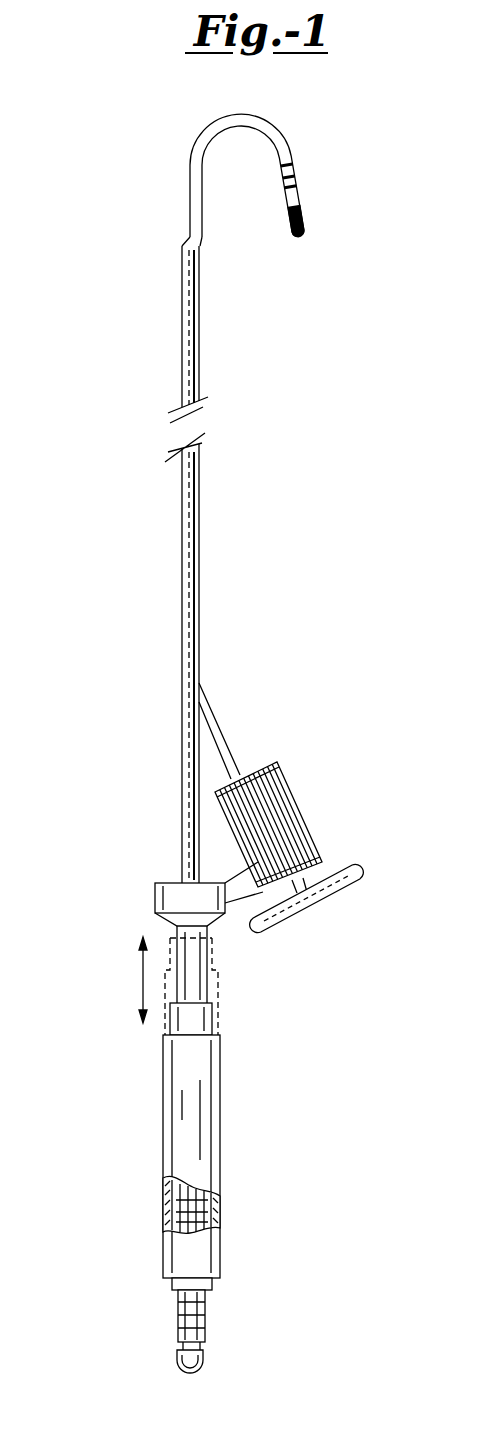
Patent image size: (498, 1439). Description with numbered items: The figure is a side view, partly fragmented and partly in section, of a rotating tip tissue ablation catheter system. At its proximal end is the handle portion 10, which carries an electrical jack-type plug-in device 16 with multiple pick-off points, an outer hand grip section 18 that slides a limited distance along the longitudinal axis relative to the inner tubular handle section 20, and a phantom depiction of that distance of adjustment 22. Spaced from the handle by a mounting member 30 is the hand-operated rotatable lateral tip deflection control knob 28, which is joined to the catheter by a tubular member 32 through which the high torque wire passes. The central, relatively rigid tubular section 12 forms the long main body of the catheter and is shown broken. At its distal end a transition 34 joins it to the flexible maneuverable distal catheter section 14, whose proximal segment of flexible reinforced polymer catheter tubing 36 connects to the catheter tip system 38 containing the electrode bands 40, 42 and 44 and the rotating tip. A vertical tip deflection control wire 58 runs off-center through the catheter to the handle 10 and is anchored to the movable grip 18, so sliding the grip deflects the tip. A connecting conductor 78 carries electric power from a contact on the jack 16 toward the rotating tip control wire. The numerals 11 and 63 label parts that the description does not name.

The handle portion 10 is at (253, 1098).
The actuator button 11 is at (165, 1370).
The central tubular section 12 is at (218, 560).
The distal catheter section 14 is at (180, 115).
The electrical jack-type plug-in device 16 is at (203, 1312).
The outer hand grip section 18 is at (167, 1102).
The inner tubular handle section 20 is at (208, 928).
The distance of adjustment 22 is at (222, 1007).
The lateral tip deflection control knob 28 is at (314, 798).
The mounting member 30 is at (237, 907).
The tubular member 32 is at (222, 728).
The transition 34 is at (187, 237).
The flexible reinforced polymer catheter tubing 36 is at (238, 122).
The catheter tip system 38 is at (322, 201).
The electrode band 40 is at (291, 166).
The electrode band 42 is at (295, 177).
The electrode band 44 is at (298, 186).
The vertical tip deflection control wire 58 is at (190, 1213).
The sleeve 63 is at (172, 1197).
The connecting conductor 78 is at (213, 1200).